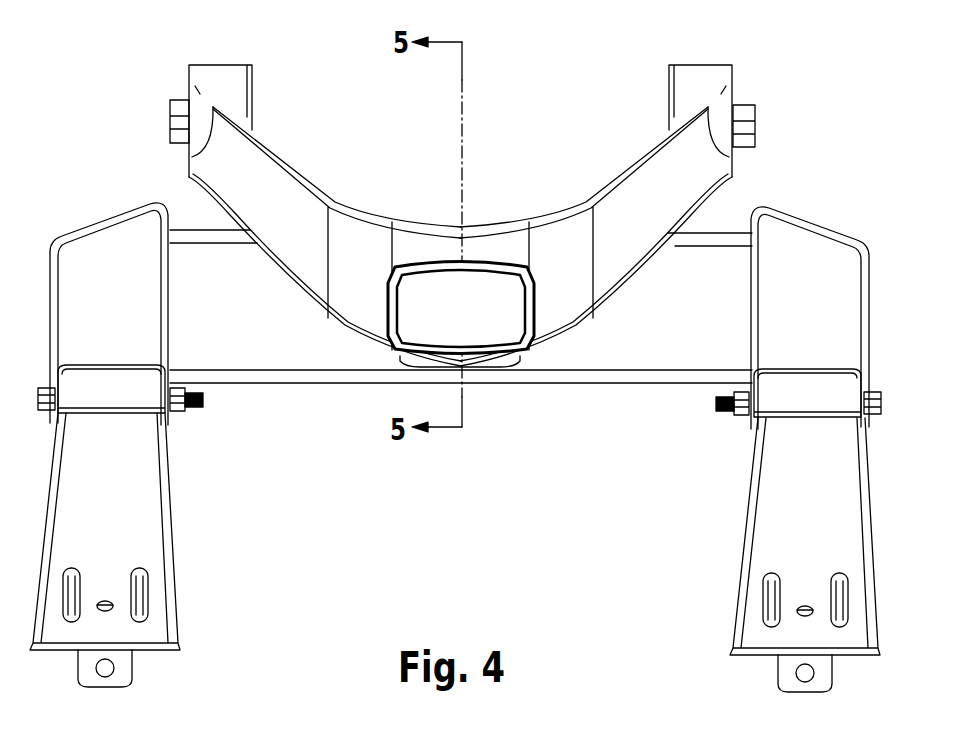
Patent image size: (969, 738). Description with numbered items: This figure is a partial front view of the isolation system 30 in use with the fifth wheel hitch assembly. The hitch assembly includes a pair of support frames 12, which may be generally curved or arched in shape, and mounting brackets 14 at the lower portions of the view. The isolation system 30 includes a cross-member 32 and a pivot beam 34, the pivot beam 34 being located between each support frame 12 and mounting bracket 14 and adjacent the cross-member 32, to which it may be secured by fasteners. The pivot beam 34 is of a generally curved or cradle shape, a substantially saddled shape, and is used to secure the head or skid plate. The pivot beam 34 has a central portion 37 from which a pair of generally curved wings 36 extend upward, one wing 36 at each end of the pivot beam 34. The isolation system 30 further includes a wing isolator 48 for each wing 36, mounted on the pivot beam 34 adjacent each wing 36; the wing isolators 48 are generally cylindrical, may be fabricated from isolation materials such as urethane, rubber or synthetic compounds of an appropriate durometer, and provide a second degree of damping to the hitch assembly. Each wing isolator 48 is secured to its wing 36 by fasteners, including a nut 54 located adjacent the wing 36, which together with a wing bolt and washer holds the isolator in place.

The support frame 12 is at (87, 493).
The mounting bracket 14 is at (56, 278).
The isolation system 30 is at (484, 225).
The cross-member 32 is at (633, 347).
The pivot beam 34 is at (551, 322).
The wing 36 is at (205, 167).
The central portion 37 is at (492, 230).
The wing isolator 48 is at (245, 73).
The nut 54 is at (178, 127).